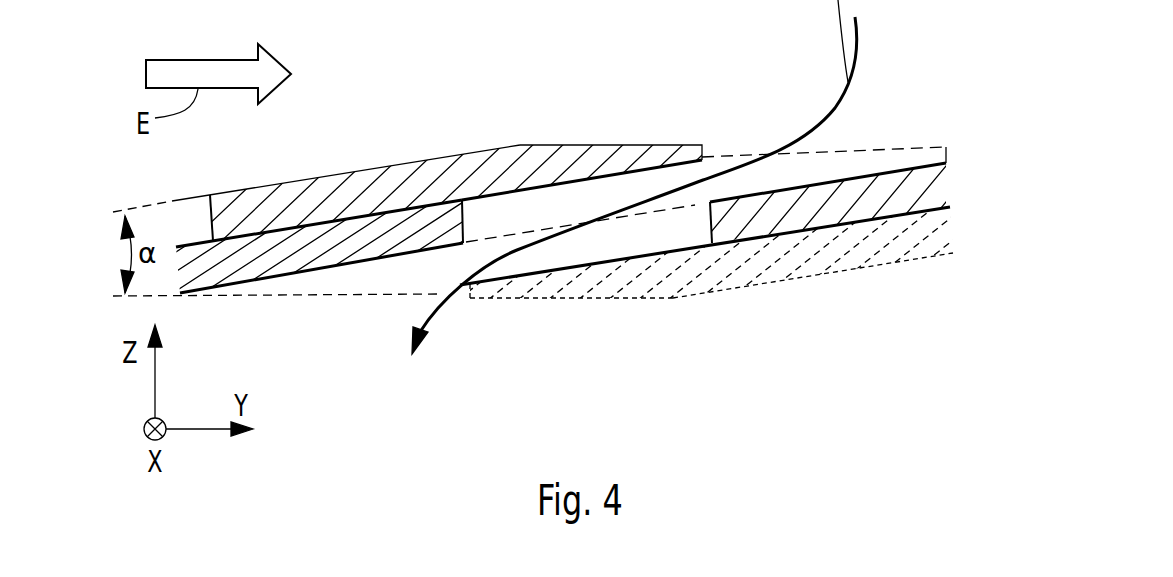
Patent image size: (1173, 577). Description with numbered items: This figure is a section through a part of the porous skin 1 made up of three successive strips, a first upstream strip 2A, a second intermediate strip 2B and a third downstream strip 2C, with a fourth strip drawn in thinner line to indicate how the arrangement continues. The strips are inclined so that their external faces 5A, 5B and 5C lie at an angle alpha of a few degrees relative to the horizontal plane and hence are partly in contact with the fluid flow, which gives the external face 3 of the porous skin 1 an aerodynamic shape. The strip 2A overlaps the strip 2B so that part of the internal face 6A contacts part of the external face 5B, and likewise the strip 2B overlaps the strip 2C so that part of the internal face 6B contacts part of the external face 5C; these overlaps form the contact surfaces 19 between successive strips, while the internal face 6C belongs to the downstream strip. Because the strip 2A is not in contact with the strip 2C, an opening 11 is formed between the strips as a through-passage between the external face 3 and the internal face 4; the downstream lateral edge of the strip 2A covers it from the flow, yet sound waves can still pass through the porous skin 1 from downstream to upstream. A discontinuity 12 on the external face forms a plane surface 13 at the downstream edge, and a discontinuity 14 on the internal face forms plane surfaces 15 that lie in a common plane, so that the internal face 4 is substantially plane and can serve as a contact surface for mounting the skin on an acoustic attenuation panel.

The porous skin 1 is at (981, 82).
The upstream strip 2A is at (514, 177).
The intermediate strip 2B is at (262, 258).
The downstream strip 2C is at (905, 193).
The external face of the porous skin 3 is at (370, 72).
The internal face of the porous skin 4 is at (372, 386).
The external face of the upstream strip 5A is at (405, 143).
The external face of the intermediate strip 5B is at (720, 133).
The external face of the downstream strip 5C is at (856, 155).
The internal face of the upstream strip 6A is at (422, 212).
The internal face of the intermediate strip 6B is at (687, 230).
The internal face of the downstream strip 6C is at (841, 244).
The opening 11 is at (530, 278).
The discontinuity 12 is at (540, 122).
The plane surface 13 is at (620, 124).
The discontinuity 14 is at (665, 321).
The plane surface 15 is at (570, 321).
The contact surface 19 is at (309, 205).